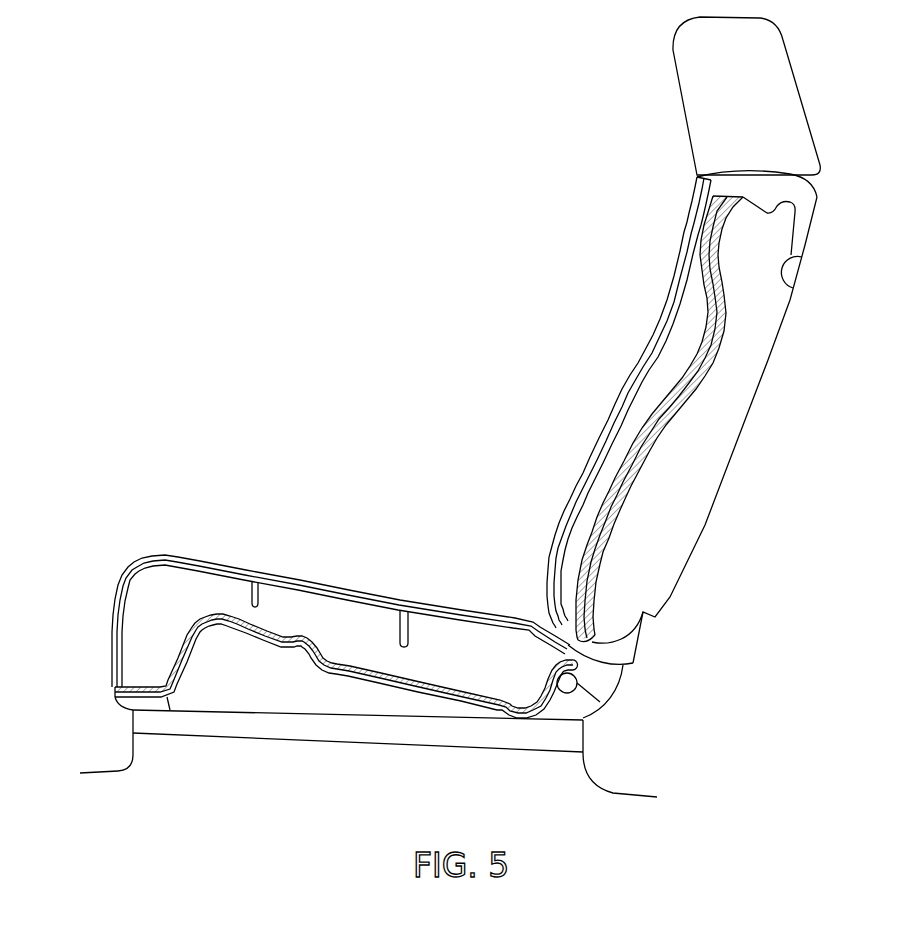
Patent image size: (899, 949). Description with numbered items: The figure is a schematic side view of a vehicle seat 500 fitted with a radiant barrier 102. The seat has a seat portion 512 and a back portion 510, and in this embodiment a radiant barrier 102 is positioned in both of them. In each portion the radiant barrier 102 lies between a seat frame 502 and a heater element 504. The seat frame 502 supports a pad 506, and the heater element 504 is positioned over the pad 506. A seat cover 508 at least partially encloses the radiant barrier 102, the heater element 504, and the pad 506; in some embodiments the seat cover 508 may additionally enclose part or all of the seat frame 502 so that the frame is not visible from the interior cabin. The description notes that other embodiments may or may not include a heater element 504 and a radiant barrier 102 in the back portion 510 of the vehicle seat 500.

The vehicle seat 500 is at (263, 145).
The seat frame 502 is at (671, 575).
The heater element 504 is at (679, 275).
The pad 506 is at (593, 495).
The seat cover 508 is at (612, 416).
The back portion 510 is at (548, 298).
The seat portion 512 is at (417, 567).
The radiant barrier 102 is at (674, 392).